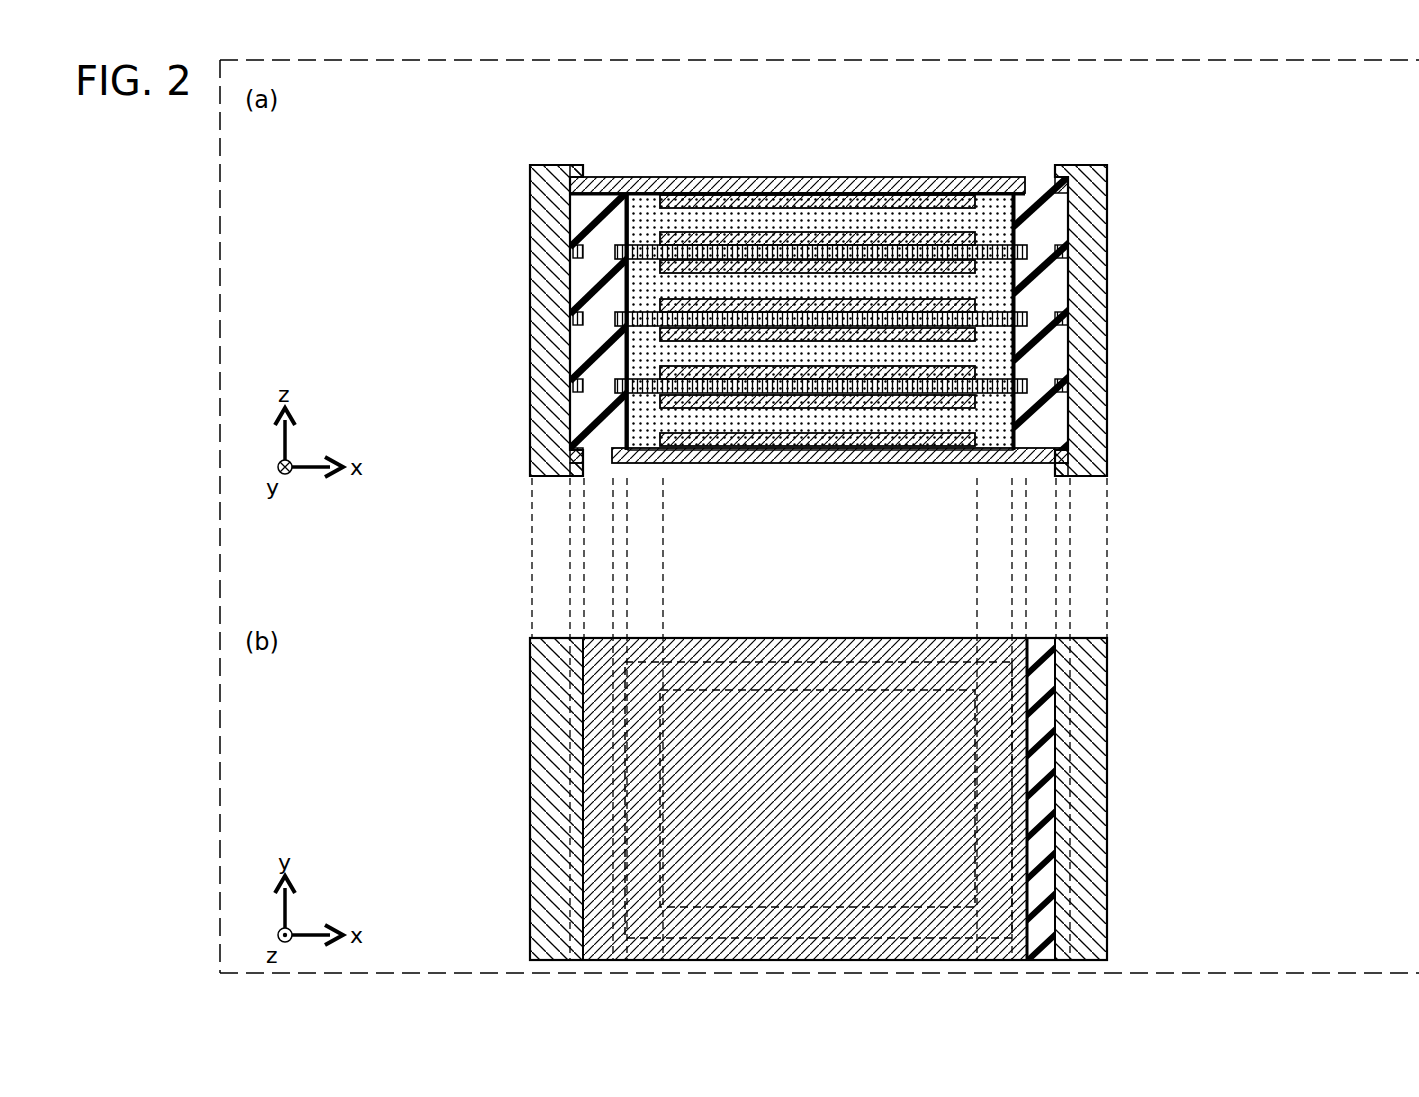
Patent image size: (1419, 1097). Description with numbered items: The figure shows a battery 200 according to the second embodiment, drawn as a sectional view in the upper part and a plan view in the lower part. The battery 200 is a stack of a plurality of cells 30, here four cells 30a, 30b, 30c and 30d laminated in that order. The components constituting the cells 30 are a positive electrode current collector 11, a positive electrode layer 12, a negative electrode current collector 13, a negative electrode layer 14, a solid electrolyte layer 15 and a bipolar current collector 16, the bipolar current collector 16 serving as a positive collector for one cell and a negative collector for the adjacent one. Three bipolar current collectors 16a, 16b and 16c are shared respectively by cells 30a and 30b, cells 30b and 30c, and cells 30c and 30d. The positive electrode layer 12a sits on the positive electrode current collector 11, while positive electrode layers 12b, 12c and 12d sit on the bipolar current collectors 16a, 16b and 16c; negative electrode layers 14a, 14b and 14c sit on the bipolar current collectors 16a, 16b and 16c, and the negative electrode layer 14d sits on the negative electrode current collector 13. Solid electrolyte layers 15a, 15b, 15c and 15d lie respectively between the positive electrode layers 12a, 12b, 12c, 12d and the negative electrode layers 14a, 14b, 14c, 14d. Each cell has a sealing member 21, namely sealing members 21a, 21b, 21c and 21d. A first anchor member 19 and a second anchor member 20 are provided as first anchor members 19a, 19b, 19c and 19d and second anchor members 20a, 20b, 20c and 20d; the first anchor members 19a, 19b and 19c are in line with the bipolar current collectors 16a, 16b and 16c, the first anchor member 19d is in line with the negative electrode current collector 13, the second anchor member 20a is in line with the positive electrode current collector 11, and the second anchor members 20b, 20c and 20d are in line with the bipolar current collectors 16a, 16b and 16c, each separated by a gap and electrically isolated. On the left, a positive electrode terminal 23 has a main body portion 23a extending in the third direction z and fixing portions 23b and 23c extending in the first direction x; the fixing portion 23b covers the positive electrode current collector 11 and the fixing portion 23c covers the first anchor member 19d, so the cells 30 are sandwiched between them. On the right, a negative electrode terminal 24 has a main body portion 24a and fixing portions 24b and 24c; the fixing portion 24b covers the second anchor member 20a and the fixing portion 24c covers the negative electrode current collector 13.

The battery 200 is at (651, 124).
The positive electrode current collector 11 is at (1065, 185).
The negative electrode current collector 13 is at (1070, 456).
The positive electrode layer 12 is at (983, 304).
The positive electrode layer 12a is at (1070, 201).
The positive electrode layer 12b is at (1070, 267).
The positive electrode layer 12c is at (1070, 335).
The positive electrode layer 12d is at (1070, 401).
The negative electrode layer 14 is at (983, 361).
The negative electrode layer 14a is at (1070, 238).
The negative electrode layer 14b is at (1070, 305).
The negative electrode layer 14c is at (1070, 372).
The negative electrode layer 14d is at (1070, 439).
The solid electrolyte layer 15 is at (967, 332).
The solid electrolyte layer 15a is at (1070, 220).
The solid electrolyte layer 15b is at (1070, 287).
The solid electrolyte layer 15c is at (1070, 354).
The solid electrolyte layer 15d is at (1070, 421).
The bipolar current collector 16 is at (940, 331).
The bipolar current collector 16a is at (1070, 252).
The bipolar current collector 16b is at (1070, 319).
The bipolar current collector 16c is at (1070, 386).
The first anchor member 19 is at (509, 321).
The first anchor member 19a is at (578, 238).
The first anchor member 19b is at (578, 305).
The first anchor member 19c is at (578, 372).
The first anchor member 19d is at (578, 440).
The second anchor member 20 is at (1087, 288).
The second anchor member 20a is at (1040, 200).
The second anchor member 20b is at (1040, 265).
The second anchor member 20c is at (1040, 332).
The second anchor member 20d is at (1040, 398).
The sealing member 21 is at (688, 324).
The sealing member 21a is at (598, 216).
The sealing member 21b is at (598, 283).
The sealing member 21c is at (598, 350).
The sealing member 21d is at (598, 417).
The positive electrode terminal 23 is at (548, 192).
The main body portion 23a is at (535, 196).
The fixing portion 23b is at (577, 178).
The fixing portion 23c is at (578, 472).
The negative electrode terminal 24 is at (1100, 168).
The main body portion 24a is at (1108, 175).
The fixing portion 24b is at (1062, 180).
The fixing portion 24c is at (1060, 470).
The cell 30 is at (1356, 336).
The cell 30a is at (1305, 92).
The cell 30b is at (1305, 228).
The cell 30c is at (1305, 340).
The cell 30d is at (1305, 455).